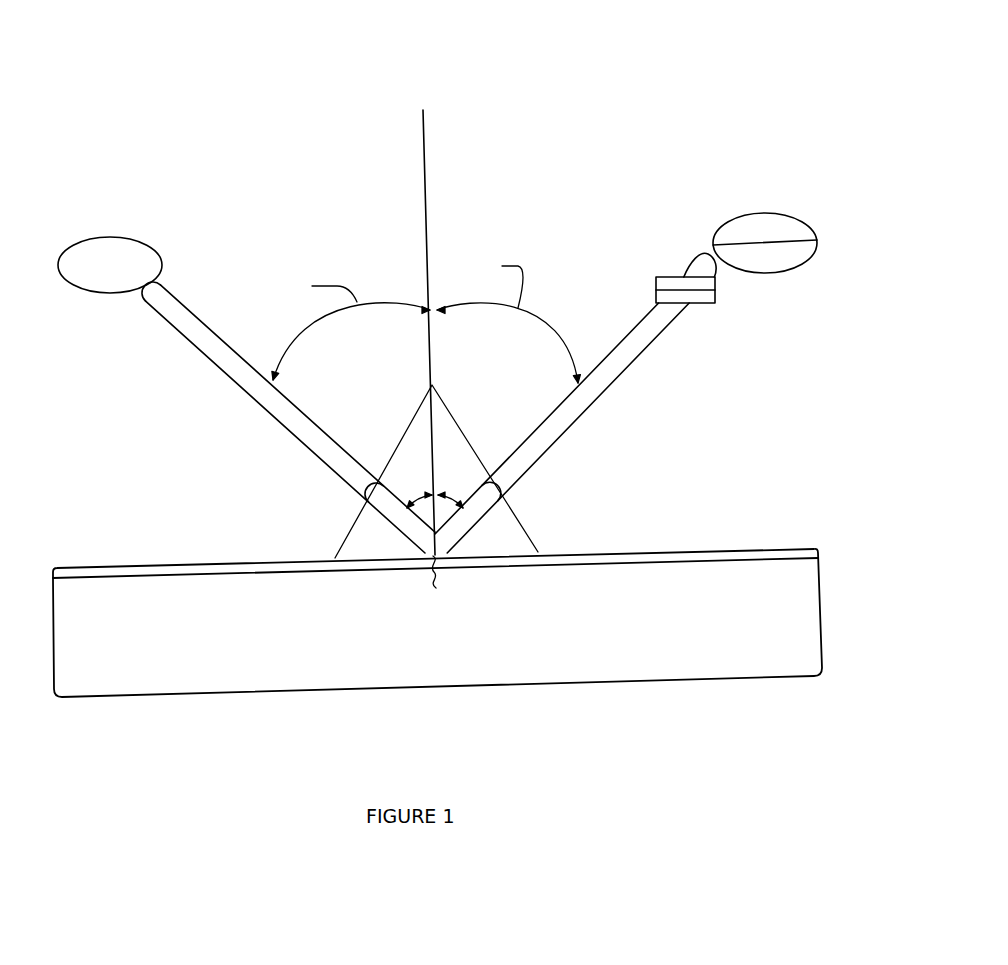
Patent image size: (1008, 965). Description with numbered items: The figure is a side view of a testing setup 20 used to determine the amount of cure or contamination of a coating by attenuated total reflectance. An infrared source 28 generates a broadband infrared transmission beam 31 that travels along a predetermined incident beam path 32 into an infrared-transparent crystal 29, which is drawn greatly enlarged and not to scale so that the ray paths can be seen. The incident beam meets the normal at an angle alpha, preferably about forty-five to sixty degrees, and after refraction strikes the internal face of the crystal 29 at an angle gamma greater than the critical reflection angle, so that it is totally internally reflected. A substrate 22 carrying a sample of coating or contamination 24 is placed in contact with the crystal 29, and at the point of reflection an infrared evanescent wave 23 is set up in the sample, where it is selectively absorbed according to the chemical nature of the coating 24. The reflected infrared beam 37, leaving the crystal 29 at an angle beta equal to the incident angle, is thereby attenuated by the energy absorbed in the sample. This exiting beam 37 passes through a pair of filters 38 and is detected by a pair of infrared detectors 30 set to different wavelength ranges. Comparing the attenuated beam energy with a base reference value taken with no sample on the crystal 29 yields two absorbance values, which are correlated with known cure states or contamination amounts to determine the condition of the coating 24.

The testing setup 20 is at (514, 45).
The substrate 22 is at (820, 590).
The infrared evanescent wave 23 is at (448, 568).
The coating or contamination 24 is at (185, 563).
The infrared source 28 is at (162, 260).
The infrared-transparent crystal 29 is at (418, 409).
The infrared detectors 30 is at (720, 229).
The infrared transmission beam 31 is at (255, 400).
The incident beam path 32 is at (146, 337).
The reflected infrared beam 37 is at (637, 335).
The filters 38 is at (657, 290).